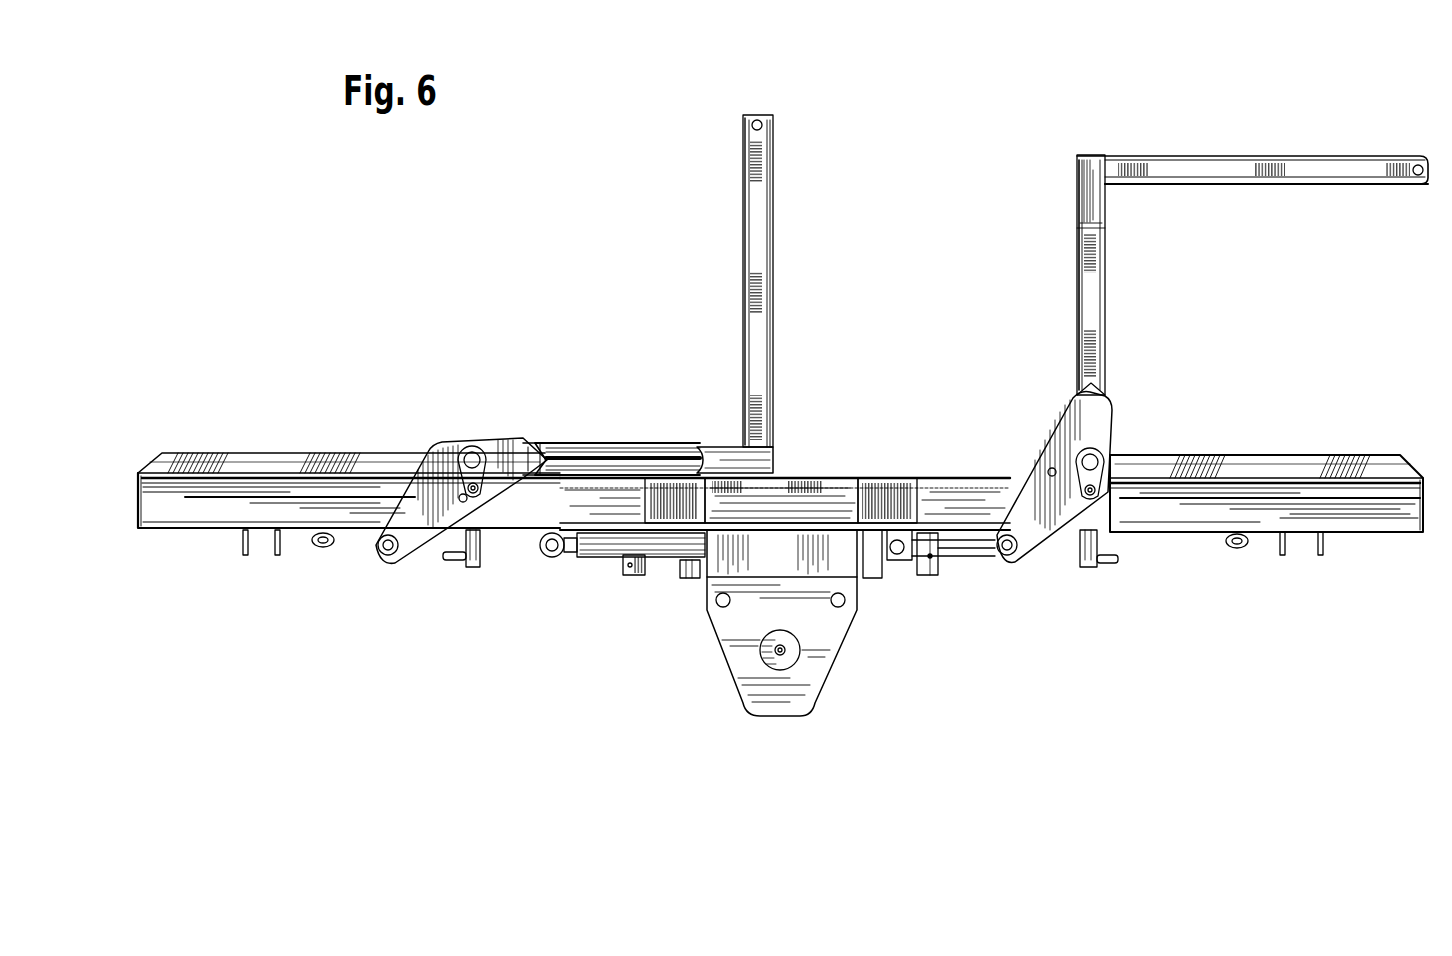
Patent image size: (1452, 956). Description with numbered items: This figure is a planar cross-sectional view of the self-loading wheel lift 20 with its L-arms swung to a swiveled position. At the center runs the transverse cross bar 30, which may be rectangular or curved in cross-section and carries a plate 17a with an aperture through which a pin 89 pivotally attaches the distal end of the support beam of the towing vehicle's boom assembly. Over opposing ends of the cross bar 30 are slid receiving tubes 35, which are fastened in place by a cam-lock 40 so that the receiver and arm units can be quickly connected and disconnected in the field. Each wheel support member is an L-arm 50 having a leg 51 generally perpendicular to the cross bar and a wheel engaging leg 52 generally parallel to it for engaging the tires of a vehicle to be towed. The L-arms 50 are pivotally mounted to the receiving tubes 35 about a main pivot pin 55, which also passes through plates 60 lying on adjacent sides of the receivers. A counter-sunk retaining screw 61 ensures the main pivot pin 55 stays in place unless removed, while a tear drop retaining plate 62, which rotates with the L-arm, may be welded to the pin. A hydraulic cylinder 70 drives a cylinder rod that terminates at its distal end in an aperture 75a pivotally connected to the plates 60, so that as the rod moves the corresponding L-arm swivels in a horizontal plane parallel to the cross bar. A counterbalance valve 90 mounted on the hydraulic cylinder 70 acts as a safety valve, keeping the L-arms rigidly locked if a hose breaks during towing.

The self-loading wheel lift 20 is at (283, 302).
The cross bar 30 is at (865, 490).
The receiving tubes 35 is at (203, 515).
The cam-lock 40 is at (470, 565).
The L-arms 50 is at (645, 292).
The leg 51 is at (598, 447).
The wheel engaging leg 52 is at (770, 218).
The main pivot pin 55 is at (472, 455).
The plates 60 is at (410, 485).
The retaining screw 61 is at (480, 494).
The tear drop retaining plate 62 is at (1073, 462).
The hydraulic cylinder 70 is at (608, 540).
The apertures 75a is at (550, 560).
The plate 17a is at (733, 620).
The pin 89 is at (783, 652).
The counterbalance valve 90 is at (930, 572).